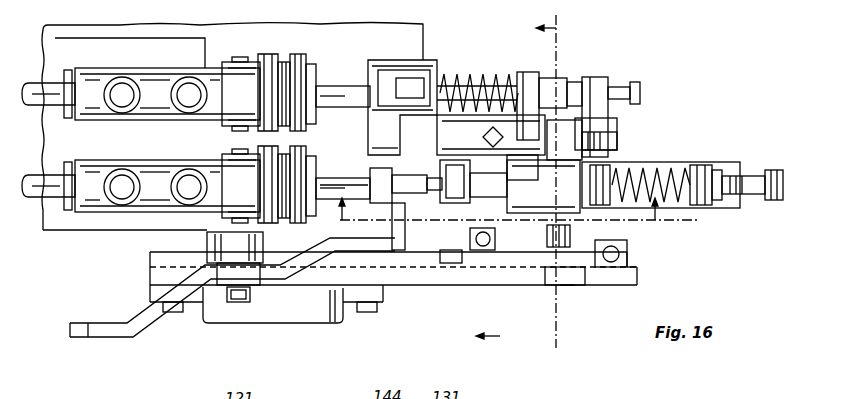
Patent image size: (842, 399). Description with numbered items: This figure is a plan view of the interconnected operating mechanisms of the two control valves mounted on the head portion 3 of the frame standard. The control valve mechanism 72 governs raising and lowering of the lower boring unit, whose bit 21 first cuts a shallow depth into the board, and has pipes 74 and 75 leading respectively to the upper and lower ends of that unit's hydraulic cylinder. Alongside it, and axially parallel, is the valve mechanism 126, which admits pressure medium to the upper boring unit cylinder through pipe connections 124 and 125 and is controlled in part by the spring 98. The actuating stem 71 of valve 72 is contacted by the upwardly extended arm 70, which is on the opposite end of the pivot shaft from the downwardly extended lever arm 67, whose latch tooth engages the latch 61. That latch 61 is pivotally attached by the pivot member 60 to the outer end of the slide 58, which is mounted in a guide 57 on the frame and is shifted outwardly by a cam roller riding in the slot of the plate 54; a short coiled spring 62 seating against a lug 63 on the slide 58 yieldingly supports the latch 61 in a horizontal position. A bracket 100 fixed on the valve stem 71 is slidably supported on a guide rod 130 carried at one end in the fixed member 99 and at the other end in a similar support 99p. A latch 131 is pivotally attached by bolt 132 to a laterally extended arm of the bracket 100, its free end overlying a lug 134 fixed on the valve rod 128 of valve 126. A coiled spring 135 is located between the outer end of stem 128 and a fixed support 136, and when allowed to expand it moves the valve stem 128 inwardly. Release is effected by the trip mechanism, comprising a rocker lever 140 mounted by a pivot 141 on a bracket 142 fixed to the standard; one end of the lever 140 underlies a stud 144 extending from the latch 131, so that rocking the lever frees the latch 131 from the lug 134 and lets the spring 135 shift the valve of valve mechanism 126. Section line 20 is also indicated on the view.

The head portion 3 is at (66, 218).
The control valve mechanism 72 is at (196, 86).
The pipe 75 is at (118, 78).
The pipe 74 is at (190, 80).
The valve mechanism 126 is at (140, 212).
The pipe connection 125 is at (118, 169).
The pipe connection 124 is at (190, 169).
The actuating stem 71 is at (330, 85).
The valve stem 128 is at (332, 178).
The fixed member 99 is at (370, 113).
The spring 98 is at (452, 76).
The bracket 100 is at (565, 75).
The upwardly extended arm 70 is at (574, 86).
The support 99p is at (598, 121).
The guide rod 130 is at (602, 139).
The coiled spring 135 is at (682, 164).
The fixed support 136 is at (742, 170).
The bolt 132 is at (452, 210).
The latch 131 is at (432, 252).
The stud 144 is at (398, 256).
The lug 134 is at (386, 212).
The lever arm 67 is at (570, 236).
The lug 63 is at (627, 248).
The slide 58 is at (536, 288).
The latch 61 is at (602, 274).
The coiled spring 62 is at (640, 272).
The pivot member 60 is at (572, 288).
The plate 54 is at (292, 300).
The guide 57 is at (332, 326).
The bracket 142 is at (240, 250).
The pivot 141 is at (240, 302).
The rocker lever 140 is at (150, 318).
The section line 20 is at (516, 185).
The bit 21 is at (511, 209).